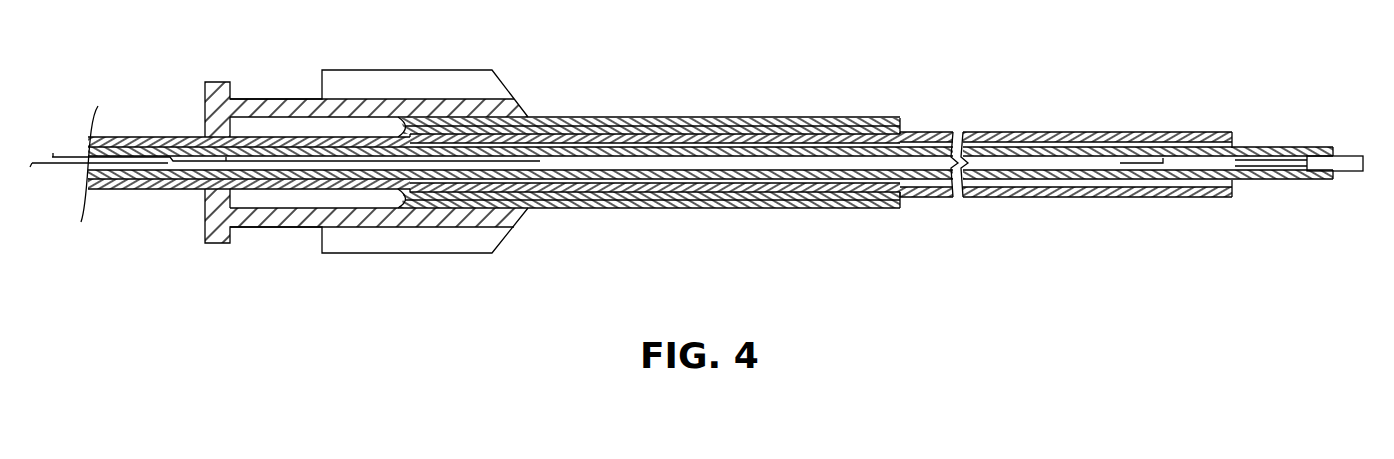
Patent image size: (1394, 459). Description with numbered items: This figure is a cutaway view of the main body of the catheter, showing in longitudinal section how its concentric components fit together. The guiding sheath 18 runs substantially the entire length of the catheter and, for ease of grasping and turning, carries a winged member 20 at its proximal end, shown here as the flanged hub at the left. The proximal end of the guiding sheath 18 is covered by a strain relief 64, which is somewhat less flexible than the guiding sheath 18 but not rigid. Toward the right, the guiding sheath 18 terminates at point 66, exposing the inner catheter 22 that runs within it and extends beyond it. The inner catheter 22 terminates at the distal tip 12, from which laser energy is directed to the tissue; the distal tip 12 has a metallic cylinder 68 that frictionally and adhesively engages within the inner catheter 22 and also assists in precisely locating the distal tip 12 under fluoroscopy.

The distal tip 12 is at (1290, 76).
The guiding sheath 18 is at (919, 132).
The winged member 20 is at (453, 83).
The inner catheter 22 is at (1250, 146).
The strain relief 64 is at (796, 118).
The point 66 is at (1232, 196).
The metallic cylinder 68 is at (1334, 173).